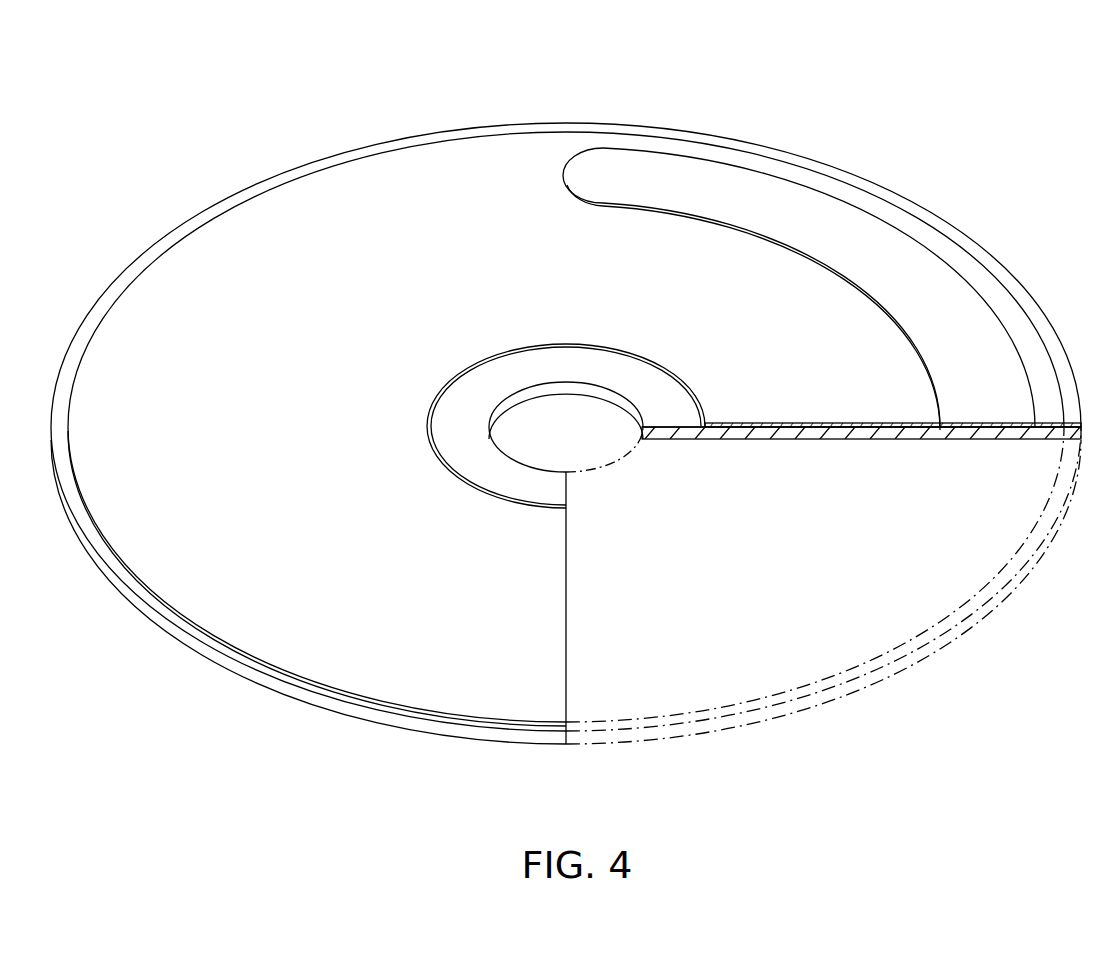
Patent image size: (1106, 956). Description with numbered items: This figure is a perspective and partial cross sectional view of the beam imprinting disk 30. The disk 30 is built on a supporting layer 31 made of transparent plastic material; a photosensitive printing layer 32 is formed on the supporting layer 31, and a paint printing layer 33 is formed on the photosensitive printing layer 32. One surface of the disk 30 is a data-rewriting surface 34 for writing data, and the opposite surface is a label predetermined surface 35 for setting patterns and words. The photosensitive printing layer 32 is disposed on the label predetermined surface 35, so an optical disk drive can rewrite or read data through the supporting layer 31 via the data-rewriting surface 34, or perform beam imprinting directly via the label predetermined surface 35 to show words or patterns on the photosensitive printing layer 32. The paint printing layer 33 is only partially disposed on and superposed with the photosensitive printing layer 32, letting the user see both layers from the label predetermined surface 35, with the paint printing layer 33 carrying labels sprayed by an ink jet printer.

The beam imprinting disk 30 is at (833, 155).
The supporting layer 31 is at (960, 439).
The photosensitive printing layer 32 is at (857, 427).
The paint printing layer 33 is at (995, 422).
The data-rewriting surface 34 is at (860, 440).
The label predetermined surface 35 is at (538, 188).